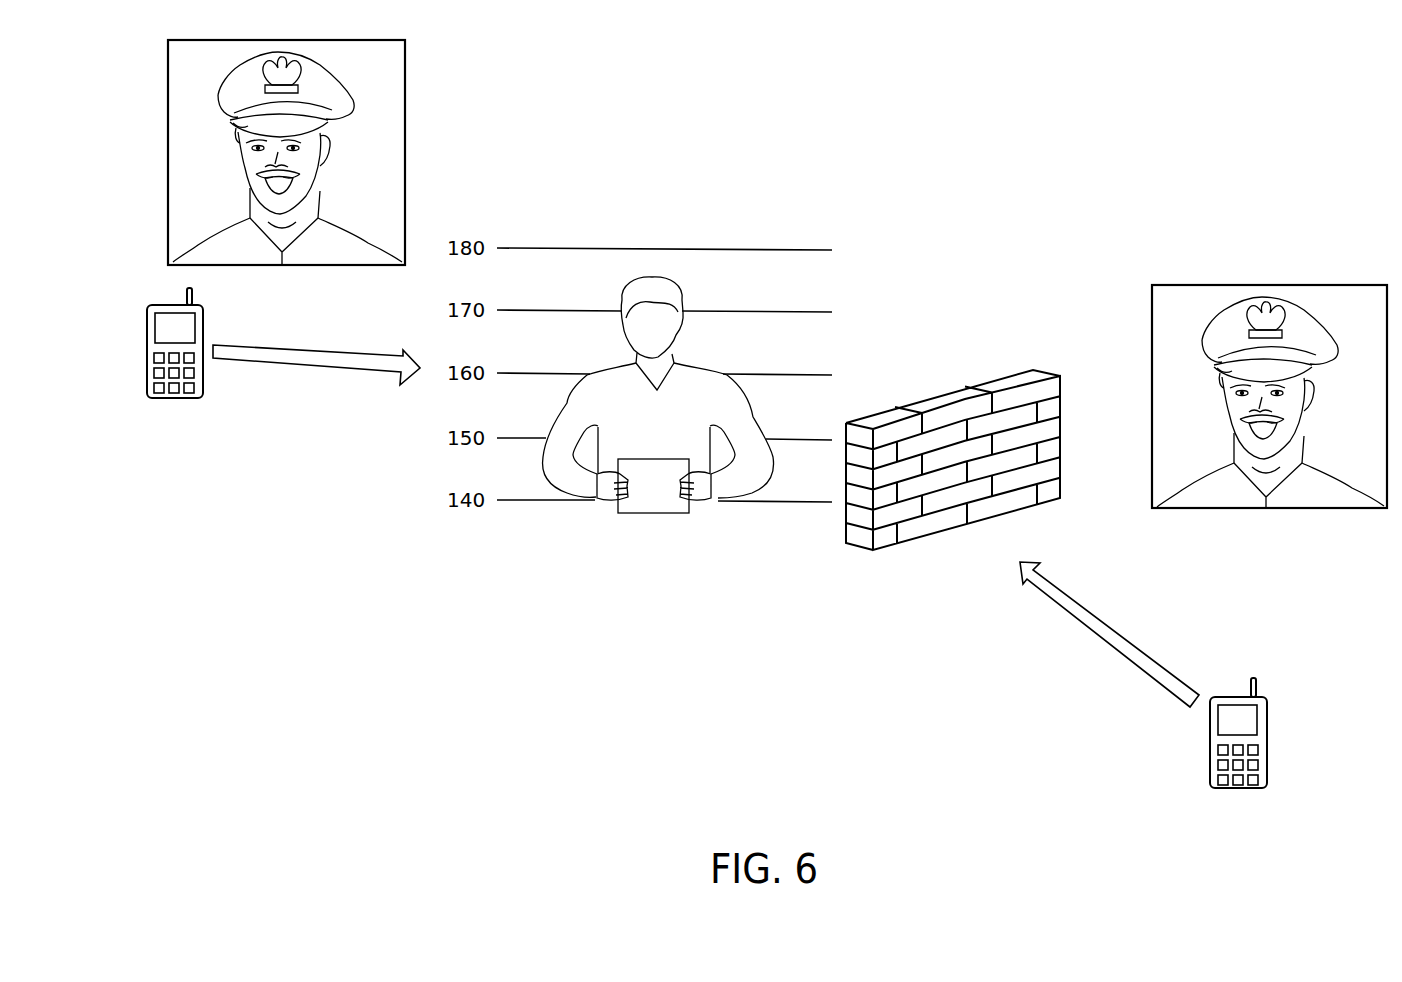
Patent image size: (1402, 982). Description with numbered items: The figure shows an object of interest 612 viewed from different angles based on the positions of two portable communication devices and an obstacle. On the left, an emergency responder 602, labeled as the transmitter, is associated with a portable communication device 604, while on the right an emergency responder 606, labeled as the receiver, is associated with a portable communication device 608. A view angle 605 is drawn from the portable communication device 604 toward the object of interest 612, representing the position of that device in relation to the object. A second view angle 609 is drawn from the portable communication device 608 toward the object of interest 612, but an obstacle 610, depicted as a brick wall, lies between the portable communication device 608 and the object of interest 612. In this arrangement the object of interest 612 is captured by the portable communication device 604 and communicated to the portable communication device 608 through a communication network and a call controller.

The emergency responder 602 is at (168, 151).
The portable communication device 604 is at (147, 352).
The view angle 605 is at (305, 369).
The emergency responder 606 is at (1152, 398).
The portable communication device 608 is at (1210, 743).
The view angle 609 is at (1107, 643).
The obstacle 610 is at (1060, 435).
The object of interest 612 is at (762, 428).